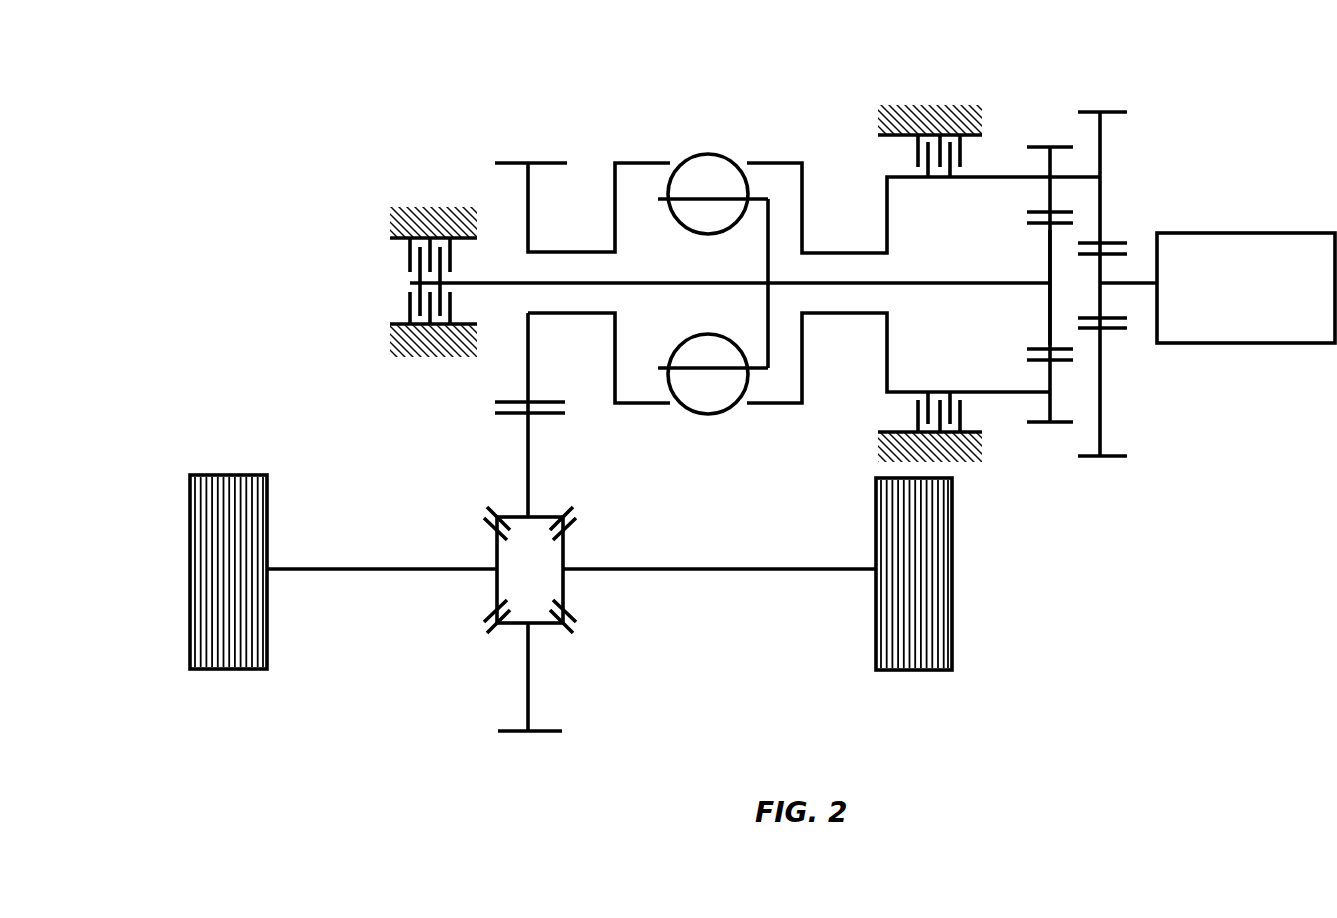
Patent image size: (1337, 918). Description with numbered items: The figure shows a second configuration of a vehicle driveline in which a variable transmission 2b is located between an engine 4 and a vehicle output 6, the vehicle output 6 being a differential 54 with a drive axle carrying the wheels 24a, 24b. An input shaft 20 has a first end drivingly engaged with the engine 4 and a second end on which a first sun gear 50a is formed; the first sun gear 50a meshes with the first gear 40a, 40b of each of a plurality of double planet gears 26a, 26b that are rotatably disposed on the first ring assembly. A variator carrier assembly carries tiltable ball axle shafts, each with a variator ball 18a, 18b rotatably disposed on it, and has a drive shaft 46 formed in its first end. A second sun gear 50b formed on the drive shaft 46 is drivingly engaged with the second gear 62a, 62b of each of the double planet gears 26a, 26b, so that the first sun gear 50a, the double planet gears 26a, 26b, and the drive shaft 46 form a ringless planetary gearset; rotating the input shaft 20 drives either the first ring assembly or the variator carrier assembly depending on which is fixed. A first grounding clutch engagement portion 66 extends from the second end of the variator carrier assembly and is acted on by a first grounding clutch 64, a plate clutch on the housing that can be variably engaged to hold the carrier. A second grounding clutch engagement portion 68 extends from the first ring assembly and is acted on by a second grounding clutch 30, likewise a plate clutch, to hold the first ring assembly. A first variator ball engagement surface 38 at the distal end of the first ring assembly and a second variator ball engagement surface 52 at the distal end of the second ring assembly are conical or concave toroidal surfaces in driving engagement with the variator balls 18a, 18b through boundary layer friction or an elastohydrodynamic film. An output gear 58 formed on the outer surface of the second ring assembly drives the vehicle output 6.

The variable transmission 2b is at (733, 80).
The engine 4 is at (1293, 233).
The vehicle output 6 is at (527, 742).
The variator ball 18a is at (715, 153).
The variator ball 18b is at (710, 414).
The input shaft 20 is at (1137, 283).
The wheel 24a is at (250, 669).
The wheel 24b is at (940, 670).
The double planet gear 26a is at (1097, 112).
The double planet gear 26b is at (1097, 456).
The second grounding clutch 30 is at (926, 94).
The first variator ball engagement surface 38 is at (750, 163).
The first gear 40a is at (1103, 160).
The first gear 40b is at (1103, 408).
The drive shaft 46 is at (910, 283).
The first sun gear 50a is at (1103, 297).
The second sun gear 50b is at (1048, 310).
The second variator ball engagement surface 52 is at (670, 163).
The differential 54 is at (565, 592).
The output gear 58 is at (529, 372).
The second gear 62a is at (1048, 192).
The second gear 62b is at (1048, 370).
The first grounding clutch 64 is at (404, 190).
The first grounding clutch engagement portion 66 is at (410, 275).
The second grounding clutch engagement portion 68 is at (955, 170).